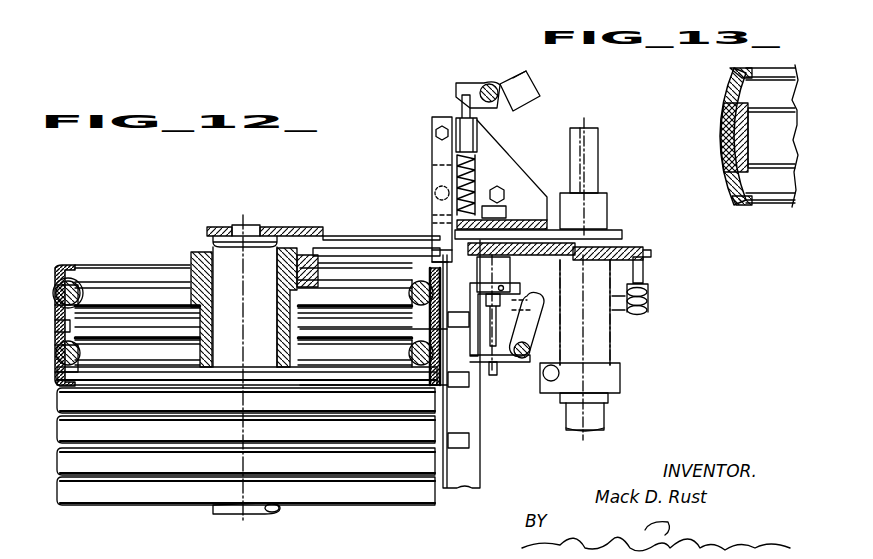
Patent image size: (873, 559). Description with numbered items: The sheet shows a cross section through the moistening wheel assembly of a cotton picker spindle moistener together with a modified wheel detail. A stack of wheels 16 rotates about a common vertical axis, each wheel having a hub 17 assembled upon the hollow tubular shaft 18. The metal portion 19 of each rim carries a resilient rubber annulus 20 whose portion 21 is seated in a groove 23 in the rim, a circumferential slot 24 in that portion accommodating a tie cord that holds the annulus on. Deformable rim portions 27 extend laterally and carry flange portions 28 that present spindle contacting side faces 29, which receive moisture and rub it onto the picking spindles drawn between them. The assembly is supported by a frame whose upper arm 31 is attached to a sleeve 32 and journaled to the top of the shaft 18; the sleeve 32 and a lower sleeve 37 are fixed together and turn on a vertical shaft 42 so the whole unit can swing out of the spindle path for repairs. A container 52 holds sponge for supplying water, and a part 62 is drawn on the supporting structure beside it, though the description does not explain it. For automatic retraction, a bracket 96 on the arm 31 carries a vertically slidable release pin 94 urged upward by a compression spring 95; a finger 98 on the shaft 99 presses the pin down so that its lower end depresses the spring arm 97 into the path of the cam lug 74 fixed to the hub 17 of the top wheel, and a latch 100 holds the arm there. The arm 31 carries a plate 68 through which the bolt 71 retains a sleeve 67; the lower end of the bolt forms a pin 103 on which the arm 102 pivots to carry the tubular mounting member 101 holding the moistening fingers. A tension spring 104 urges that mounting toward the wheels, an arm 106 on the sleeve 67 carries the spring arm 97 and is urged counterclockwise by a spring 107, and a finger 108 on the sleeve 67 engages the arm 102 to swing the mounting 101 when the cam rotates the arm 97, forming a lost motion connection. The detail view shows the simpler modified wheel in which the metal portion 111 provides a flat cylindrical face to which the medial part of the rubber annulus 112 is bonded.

In FIG. 12, the wheel 16 is at (138, 505).
In FIG. 13, the wheel 16 is at (772, 96).
In FIG. 12, the hub 17 is at (200, 252).
In FIG. 12, the hollow tubular shaft 18 is at (230, 515).
In FIG. 12, the metal portion of the wheel rim 19 is at (84, 296).
In FIG. 12, the annulus 20 is at (57, 273).
In FIG. 12, the portion of the annulus 21 is at (75, 288).
In FIG. 12, the groove 23 is at (85, 365).
In FIG. 12, the circumferential slot 24 is at (55, 296).
In FIG. 12, the rim portion 27 is at (55, 368).
In FIG. 12, the flange portion 28 is at (55, 326).
In FIG. 13, the flange portion 28 is at (735, 210).
In FIG. 12, the side face 29 is at (80, 505).
In FIG. 13, the side face 29 is at (730, 70).
In FIG. 12, the upper arm 31 is at (340, 230).
In FIG. 12, the sleeve 32 is at (612, 330).
In FIG. 12, the sleeve 37 is at (597, 410).
In FIG. 12, the vertical shaft 42 is at (597, 168).
In FIG. 12, the container 52 is at (442, 410).
In FIG. 12, the lower frame lug 62 is at (440, 448).
In FIG. 12, the sleeve 67 is at (505, 272).
In FIG. 12, the plate 68 is at (560, 226).
In FIG. 12, the bolt 71 is at (506, 206).
In FIG. 12, the cam lug 74 is at (305, 258).
In FIG. 12, the release pin 94 is at (462, 100).
In FIG. 12, the compression spring 95 is at (460, 165).
In FIG. 12, the bracket 96 is at (520, 178).
In FIG. 12, the spring arm 97 is at (375, 250).
In FIG. 12, the finger 98 is at (458, 84).
In FIG. 12, the shaft 99 is at (490, 84).
In FIG. 12, the latch 100 is at (434, 255).
In FIG. 12, the tubular mounting member 101 is at (480, 430).
In FIG. 12, the arm 102 is at (493, 368).
In FIG. 12, the pin 103 is at (498, 337).
In FIG. 12, the tension spring 104 is at (540, 300).
In FIG. 12, the arm 106 is at (645, 246).
In FIG. 12, the spring 107 is at (650, 297).
In FIG. 12, the finger 108 is at (478, 312).
In FIG. 13, the metal portion 111 is at (722, 122).
In FIG. 13, the resilient rubber annulus 112 is at (712, 151).